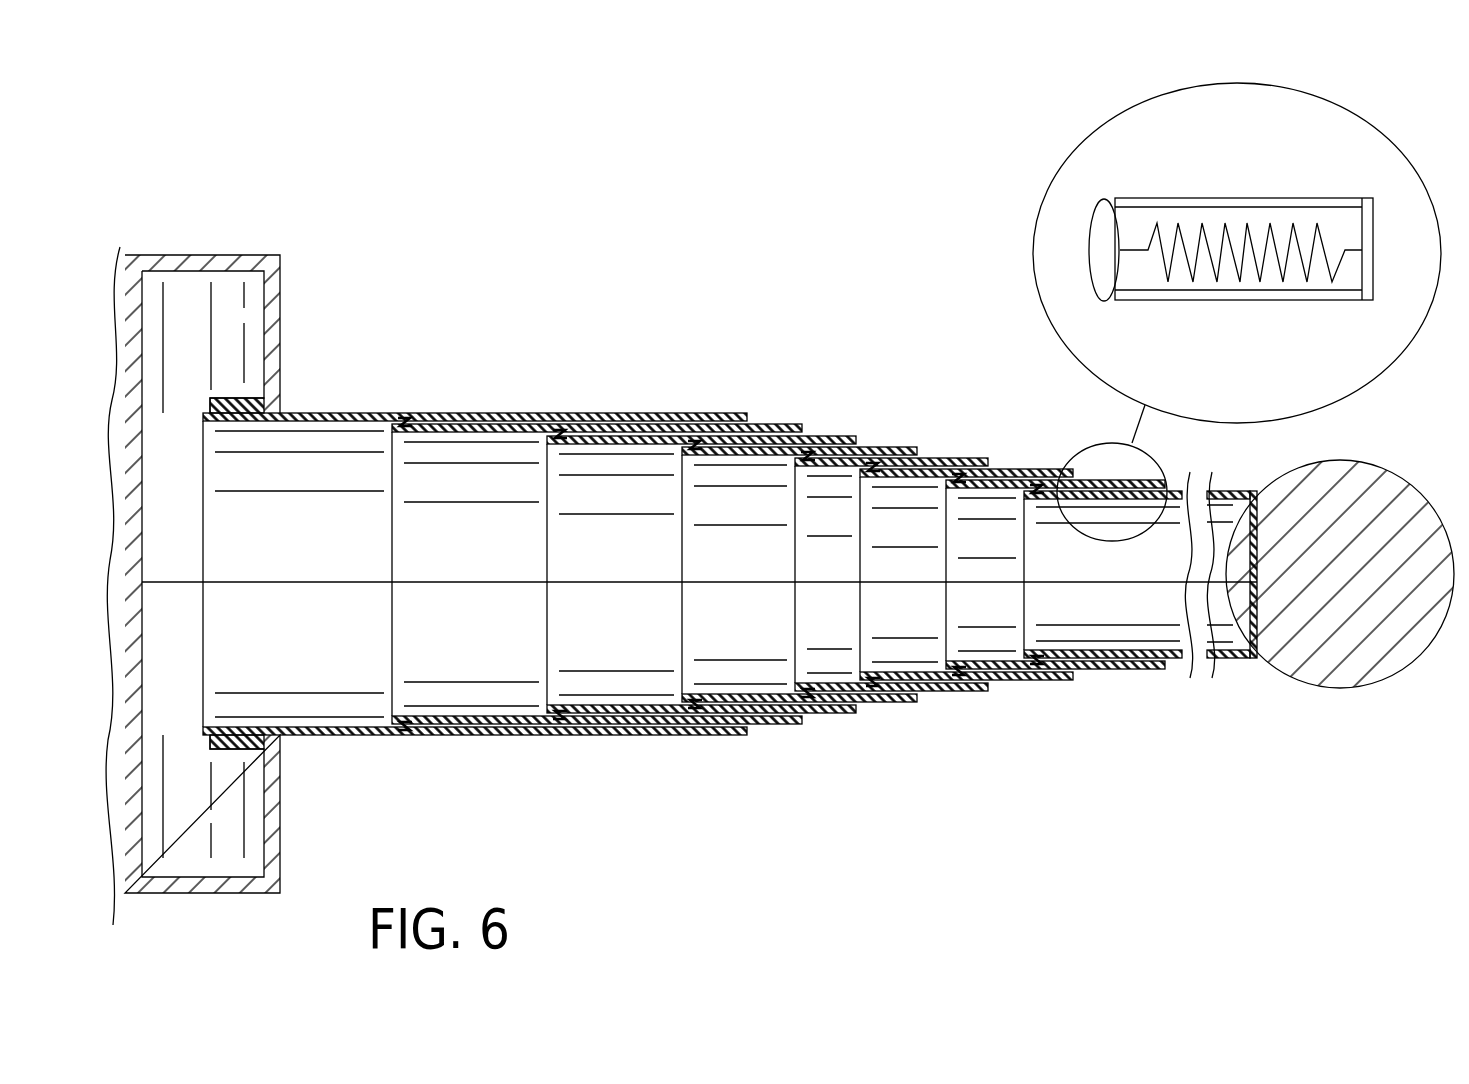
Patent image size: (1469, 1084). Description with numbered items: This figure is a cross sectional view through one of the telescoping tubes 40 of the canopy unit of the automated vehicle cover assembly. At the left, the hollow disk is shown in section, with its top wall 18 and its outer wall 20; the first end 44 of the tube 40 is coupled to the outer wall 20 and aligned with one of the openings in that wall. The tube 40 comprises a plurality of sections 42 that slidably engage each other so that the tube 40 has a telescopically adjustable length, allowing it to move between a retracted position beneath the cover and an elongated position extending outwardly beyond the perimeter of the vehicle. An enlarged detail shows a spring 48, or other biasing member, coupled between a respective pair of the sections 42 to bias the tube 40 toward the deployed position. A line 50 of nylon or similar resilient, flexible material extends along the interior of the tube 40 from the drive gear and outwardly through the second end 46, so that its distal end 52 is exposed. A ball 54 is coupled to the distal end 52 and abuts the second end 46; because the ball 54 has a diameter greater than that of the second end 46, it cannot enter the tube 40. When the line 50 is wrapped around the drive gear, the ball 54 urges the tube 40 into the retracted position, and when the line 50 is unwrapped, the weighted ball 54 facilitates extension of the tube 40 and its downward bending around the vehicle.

The top wall 18 is at (238, 255).
The outer wall 20 is at (282, 302).
The tube 40 is at (696, 520).
The sections 42 is at (726, 547).
The first end 44 is at (200, 413).
The second end 46 is at (1257, 625).
The spring 48 is at (1217, 230).
The line 50 is at (1128, 582).
The distal end 52 is at (1257, 582).
The ball 54 is at (1440, 520).